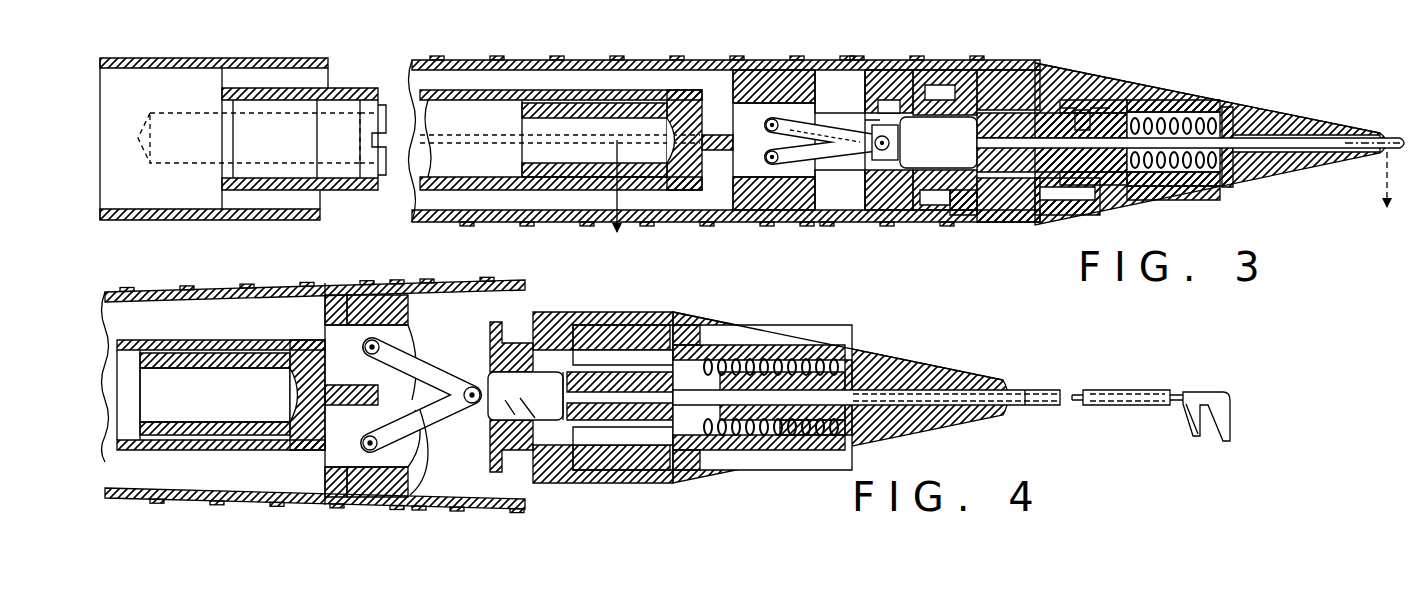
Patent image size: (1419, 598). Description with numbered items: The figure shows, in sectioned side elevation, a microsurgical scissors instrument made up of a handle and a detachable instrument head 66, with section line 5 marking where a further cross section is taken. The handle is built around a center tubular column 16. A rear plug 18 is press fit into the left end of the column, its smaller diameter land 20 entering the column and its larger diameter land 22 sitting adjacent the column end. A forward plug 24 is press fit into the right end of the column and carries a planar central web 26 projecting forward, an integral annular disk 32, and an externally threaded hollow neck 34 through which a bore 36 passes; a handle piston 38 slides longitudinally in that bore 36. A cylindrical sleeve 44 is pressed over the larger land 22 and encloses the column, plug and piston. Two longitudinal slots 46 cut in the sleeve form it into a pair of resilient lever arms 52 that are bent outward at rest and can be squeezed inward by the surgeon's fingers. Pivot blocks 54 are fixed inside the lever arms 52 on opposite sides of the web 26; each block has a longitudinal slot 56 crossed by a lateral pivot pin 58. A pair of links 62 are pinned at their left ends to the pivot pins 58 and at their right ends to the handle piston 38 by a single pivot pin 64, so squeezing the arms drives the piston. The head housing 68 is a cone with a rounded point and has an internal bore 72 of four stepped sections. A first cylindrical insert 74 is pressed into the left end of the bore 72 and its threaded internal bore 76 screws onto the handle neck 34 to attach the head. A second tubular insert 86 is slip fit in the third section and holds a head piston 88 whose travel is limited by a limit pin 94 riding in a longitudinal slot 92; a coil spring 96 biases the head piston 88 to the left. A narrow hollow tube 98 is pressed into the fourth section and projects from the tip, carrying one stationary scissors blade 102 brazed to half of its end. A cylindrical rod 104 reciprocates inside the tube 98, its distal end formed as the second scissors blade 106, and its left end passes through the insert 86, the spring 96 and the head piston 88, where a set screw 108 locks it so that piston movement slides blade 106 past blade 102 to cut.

In FIG. 3, the section line 5- 5 is at (1001, 203).
In FIG. 3, the center tubular column 16 is at (472, 90).
In FIG. 4, the center tubular column 16 is at (170, 340).
In FIG. 3, the rear plug 18 is at (172, 88).
In FIG. 3, the smaller diameter land 20 is at (285, 88).
In FIG. 3, the larger diameter land 22 is at (142, 58).
In FIG. 3, the forward plug 24 is at (690, 90).
In FIG. 4, the forward plug 24 is at (335, 338).
In FIG. 3, the central web 26 is at (790, 127).
In FIG. 4, the central web 26 is at (365, 338).
In FIG. 3, the annular disk 32 is at (868, 212).
In FIG. 4, the annular disk 32 is at (502, 324).
In FIG. 3, the hollow neck 34 is at (922, 208).
In FIG. 3, the bore 36 is at (950, 118).
In FIG. 4, the bore 36 is at (500, 455).
In FIG. 3, the handle piston 38 is at (967, 118).
In FIG. 4, the handle piston 38 is at (547, 478).
In FIG. 3, the cylindrical sleeve 44 is at (546, 60).
In FIG. 4, the cylindrical sleeve 44 is at (206, 289).
In FIG. 4, the longitudinal slots 46 is at (456, 356).
In FIG. 3, the resilient lever arms 52 is at (840, 60).
In FIG. 4, the resilient lever arms 52 is at (396, 283).
In FIG. 3, the pivot blocks 54 is at (760, 70).
In FIG. 4, the pivot blocks 54 is at (335, 322).
In FIG. 3, the longitudinal slot 56 is at (742, 115).
In FIG. 4, the longitudinal slot 56 is at (353, 370).
In FIG. 3, the lateral pivot pin 58 is at (812, 110).
In FIG. 4, the lateral pivot pin 58 is at (418, 345).
In FIG. 3, the links 62 is at (888, 92).
In FIG. 4, the links 62 is at (437, 375).
In FIG. 3, the pivot pin 64 is at (925, 85).
In FIG. 4, the pivot pin 64 is at (478, 380).
In FIG. 3, the instrument head 66 is at (1172, 70).
In FIG. 4, the instrument head 66 is at (930, 355).
In FIG. 3, the head housing 68 is at (1290, 108).
In FIG. 4, the head housing 68 is at (850, 357).
In FIG. 3, the internal bore 72 is at (1082, 110).
In FIG. 4, the internal bore 72 is at (723, 442).
In FIG. 3, the first cylindrical insert 74 is at (1012, 70).
In FIG. 4, the first cylindrical insert 74 is at (630, 312).
In FIG. 3, the internal bore of first insert 76 is at (1040, 113).
In FIG. 4, the internal bore of first insert 76 is at (606, 422).
In FIG. 3, the second tubular insert 86 is at (1170, 200).
In FIG. 4, the second tubular insert 86 is at (810, 436).
In FIG. 3, the head piston 88 is at (1092, 205).
In FIG. 4, the head piston 88 is at (668, 470).
In FIG. 3, the longitudinal slot 92 is at (1112, 100).
In FIG. 4, the longitudinal slot 92 is at (736, 358).
In FIG. 3, the limit pin 94 is at (1145, 100).
In FIG. 4, the limit pin 94 is at (678, 332).
In FIG. 3, the coil spring 96 is at (1205, 118).
In FIG. 4, the coil spring 96 is at (775, 425).
In FIG. 3, the narrow hollow tube 98 is at (1330, 138).
In FIG. 4, the narrow hollow tube 98 is at (1105, 390).
In FIG. 4, the scissors blade 102 is at (1226, 416).
In FIG. 3, the cylindrical rod 104 is at (1228, 187).
In FIG. 4, the cylindrical rod 104 is at (1032, 390).
In FIG. 4, the second scissors blade 106 is at (1190, 428).
In FIG. 3, the set screw 108 is at (973, 212).